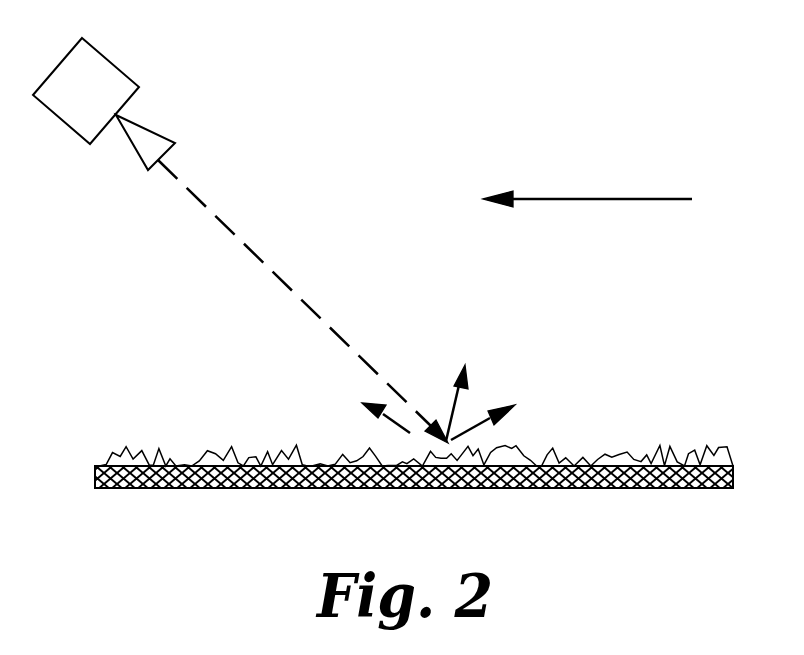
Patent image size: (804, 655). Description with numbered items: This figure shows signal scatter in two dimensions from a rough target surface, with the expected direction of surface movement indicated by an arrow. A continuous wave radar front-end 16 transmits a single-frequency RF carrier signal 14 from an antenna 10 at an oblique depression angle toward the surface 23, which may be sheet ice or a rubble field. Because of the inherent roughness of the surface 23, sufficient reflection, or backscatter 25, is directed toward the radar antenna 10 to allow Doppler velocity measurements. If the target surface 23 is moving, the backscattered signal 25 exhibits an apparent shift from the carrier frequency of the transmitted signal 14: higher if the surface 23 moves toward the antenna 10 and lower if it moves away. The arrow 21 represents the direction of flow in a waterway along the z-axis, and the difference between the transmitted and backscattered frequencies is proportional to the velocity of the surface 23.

The continuous wave radar front-end 16 is at (133, 78).
The antenna 10 is at (157, 132).
The signal 14 is at (247, 243).
The arrow 21 is at (538, 198).
The reflection (backscatter) 25 is at (512, 405).
The surface 23 is at (190, 448).